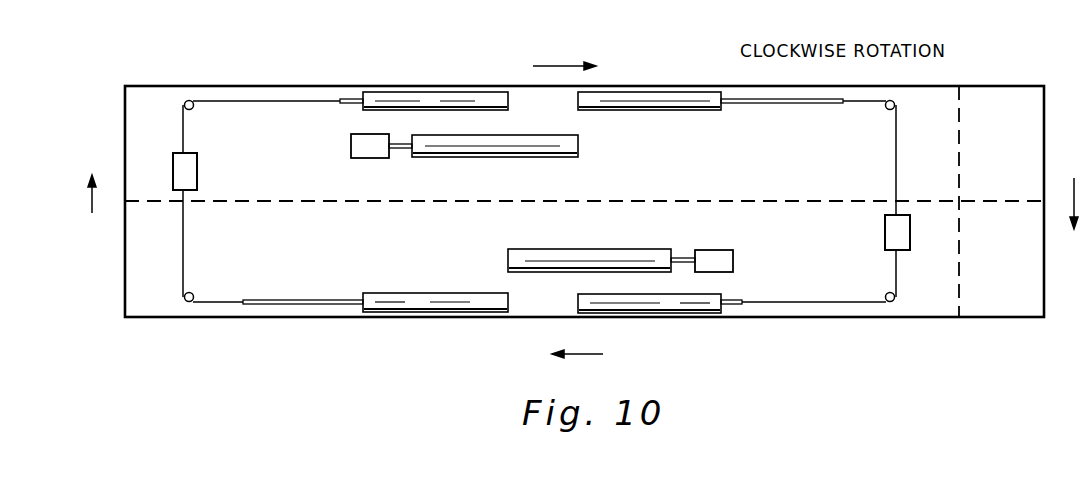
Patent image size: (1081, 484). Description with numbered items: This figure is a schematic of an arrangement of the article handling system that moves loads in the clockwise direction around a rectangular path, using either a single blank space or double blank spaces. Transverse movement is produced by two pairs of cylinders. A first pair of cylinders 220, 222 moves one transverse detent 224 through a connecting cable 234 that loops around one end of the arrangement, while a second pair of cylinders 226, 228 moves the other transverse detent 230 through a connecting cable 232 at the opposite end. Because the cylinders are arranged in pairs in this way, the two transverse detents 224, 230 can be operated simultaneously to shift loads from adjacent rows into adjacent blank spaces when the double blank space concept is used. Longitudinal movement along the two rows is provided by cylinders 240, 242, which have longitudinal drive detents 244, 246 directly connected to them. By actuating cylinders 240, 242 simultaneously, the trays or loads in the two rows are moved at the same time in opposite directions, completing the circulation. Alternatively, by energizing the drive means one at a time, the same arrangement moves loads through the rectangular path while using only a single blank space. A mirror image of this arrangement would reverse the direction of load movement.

The cylinder 220 is at (431, 92).
The cylinder 222 is at (413, 312).
The transverse detent 224 is at (197, 168).
The cylinder 226 is at (658, 92).
The cylinder 228 is at (677, 305).
The transverse detent 230 is at (886, 227).
The connecting cable 232 is at (896, 273).
The connecting cable 234 is at (184, 250).
The cylinder 240 is at (477, 148).
The cylinder 242 is at (575, 261).
The longitudinal drive detent 244 is at (368, 148).
The longitudinal drive detent 246 is at (709, 254).